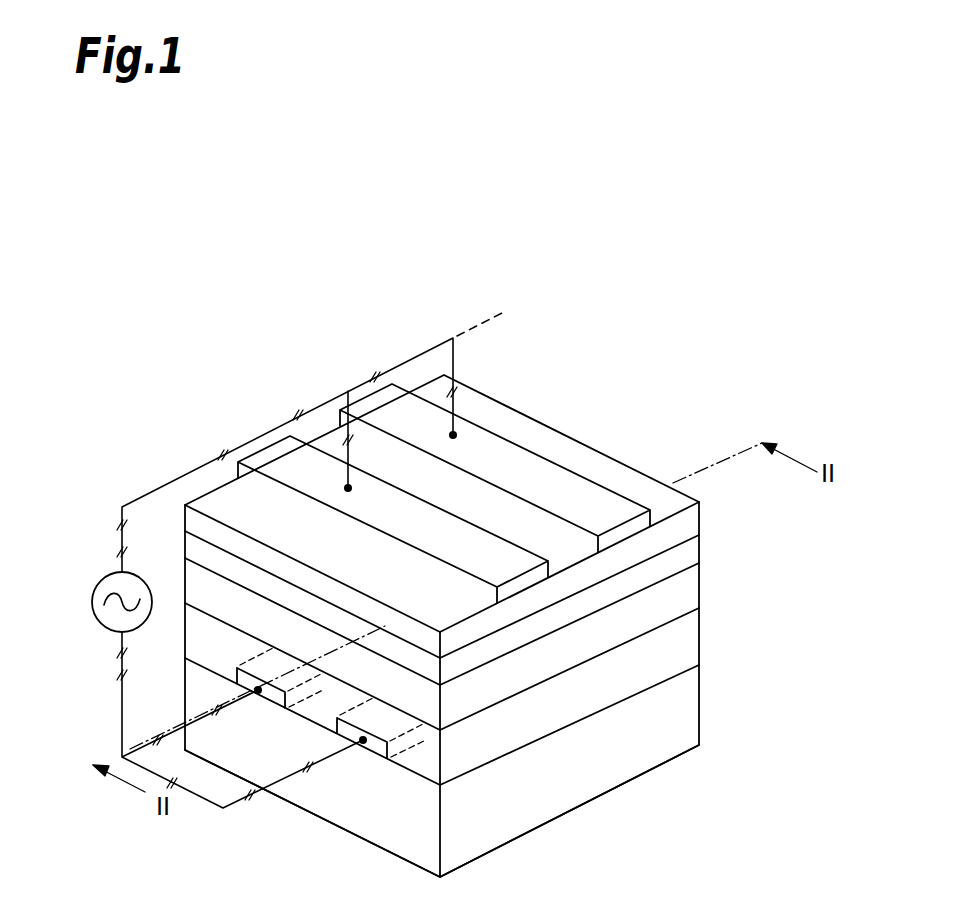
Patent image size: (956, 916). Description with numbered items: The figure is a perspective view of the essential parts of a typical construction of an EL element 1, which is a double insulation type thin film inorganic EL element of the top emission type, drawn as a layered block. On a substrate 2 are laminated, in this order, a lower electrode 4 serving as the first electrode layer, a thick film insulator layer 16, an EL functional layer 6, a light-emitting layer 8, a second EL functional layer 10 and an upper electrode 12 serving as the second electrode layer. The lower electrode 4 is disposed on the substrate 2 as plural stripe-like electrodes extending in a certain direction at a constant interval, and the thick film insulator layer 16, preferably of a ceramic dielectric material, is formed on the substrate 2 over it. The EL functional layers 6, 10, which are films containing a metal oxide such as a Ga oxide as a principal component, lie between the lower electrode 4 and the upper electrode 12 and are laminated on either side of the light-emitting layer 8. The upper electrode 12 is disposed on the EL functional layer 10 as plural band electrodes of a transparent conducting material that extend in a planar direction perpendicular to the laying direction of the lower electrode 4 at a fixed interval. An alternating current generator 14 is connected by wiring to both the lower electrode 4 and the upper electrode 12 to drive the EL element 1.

The EL element 1 is at (648, 323).
The substrate 2 is at (687, 702).
The lower electrode 4 is at (373, 748).
The EL functional layer 6 is at (687, 592).
The light-emitting layer 8 is at (687, 560).
The EL functional layer 10 is at (687, 528).
The upper electrode 12 is at (455, 548).
The alternating current generator 14 is at (106, 578).
The thick film insulator layer 16 is at (687, 642).